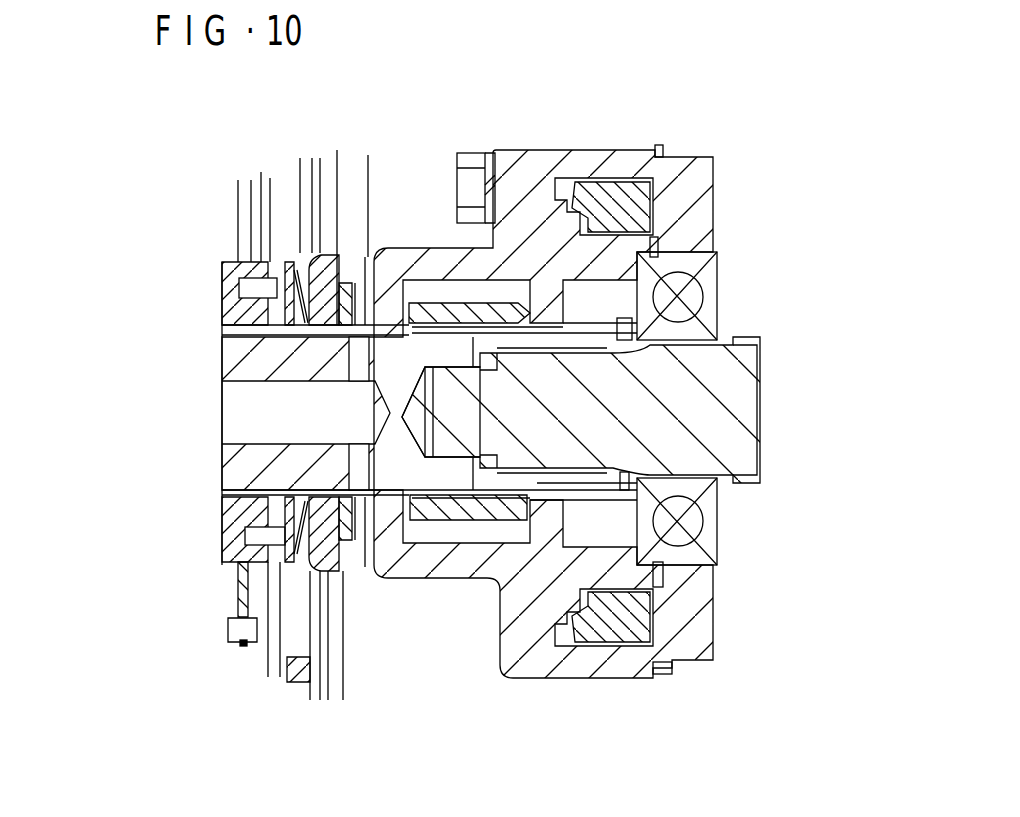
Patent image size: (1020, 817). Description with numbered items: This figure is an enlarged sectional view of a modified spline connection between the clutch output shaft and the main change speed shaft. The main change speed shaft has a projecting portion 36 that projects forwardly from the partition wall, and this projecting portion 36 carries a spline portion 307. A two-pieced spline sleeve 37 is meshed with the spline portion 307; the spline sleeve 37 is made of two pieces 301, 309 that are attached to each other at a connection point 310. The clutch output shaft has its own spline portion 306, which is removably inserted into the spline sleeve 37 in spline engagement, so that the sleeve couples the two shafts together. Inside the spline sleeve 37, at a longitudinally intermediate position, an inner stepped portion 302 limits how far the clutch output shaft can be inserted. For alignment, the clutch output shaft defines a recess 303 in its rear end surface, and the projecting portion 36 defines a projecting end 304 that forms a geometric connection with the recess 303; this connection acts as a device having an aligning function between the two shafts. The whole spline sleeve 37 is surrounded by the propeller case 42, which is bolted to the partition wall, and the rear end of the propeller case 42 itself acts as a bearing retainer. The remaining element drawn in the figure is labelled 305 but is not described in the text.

The projecting portion 36 is at (599, 443).
The spline sleeve 37 is at (612, 320).
The propeller case 42 is at (552, 663).
The piece of spline sleeve 301 is at (497, 317).
The inner stepped portion 302 is at (473, 500).
The recess 303 is at (425, 455).
The projecting end 304 is at (462, 443).
The plate 305 is at (470, 352).
The spline portion 306 is at (377, 387).
The spline portion 307 is at (612, 503).
The piece of spline sleeve 309 is at (563, 505).
The connection point 310 is at (533, 505).